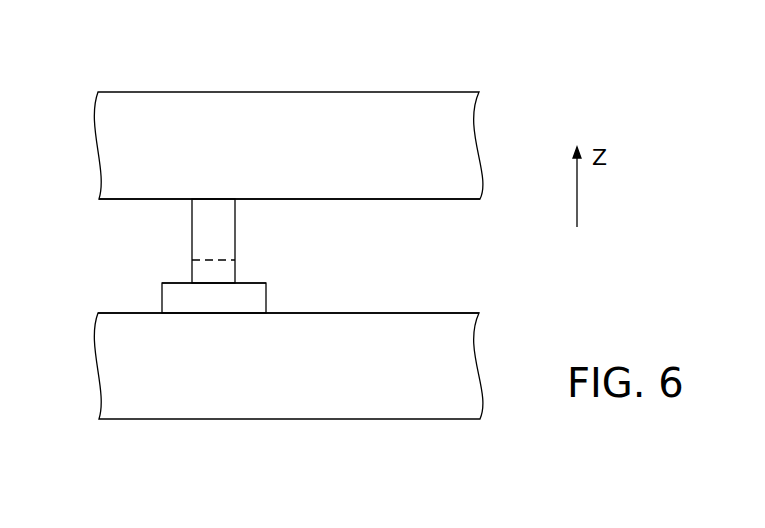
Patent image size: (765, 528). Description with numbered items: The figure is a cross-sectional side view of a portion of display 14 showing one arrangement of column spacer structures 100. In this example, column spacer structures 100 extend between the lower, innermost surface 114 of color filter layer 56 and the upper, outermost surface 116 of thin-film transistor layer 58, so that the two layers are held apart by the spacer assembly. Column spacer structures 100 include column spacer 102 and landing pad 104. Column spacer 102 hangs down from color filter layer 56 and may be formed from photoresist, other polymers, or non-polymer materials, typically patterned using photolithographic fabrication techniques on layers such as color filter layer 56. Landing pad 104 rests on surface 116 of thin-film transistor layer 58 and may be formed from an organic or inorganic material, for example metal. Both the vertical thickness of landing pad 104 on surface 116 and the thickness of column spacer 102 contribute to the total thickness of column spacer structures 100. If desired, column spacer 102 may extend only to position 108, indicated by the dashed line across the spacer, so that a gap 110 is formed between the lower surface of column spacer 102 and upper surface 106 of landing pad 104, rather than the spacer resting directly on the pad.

The display 14 is at (112, 38).
The color filter layer 56 is at (400, 107).
The thin-film transistor layer 58 is at (400, 405).
The column spacer structures 100 is at (126, 201).
The column spacer 102 is at (229, 228).
The landing pad 104 is at (267, 295).
The upper surface of pad 106 is at (250, 283).
The position 108 is at (208, 259).
The gap 110 is at (181, 262).
The lower surface of color filter layer 114 is at (412, 199).
The upper surface of thin-film transistor layer 116 is at (400, 313).